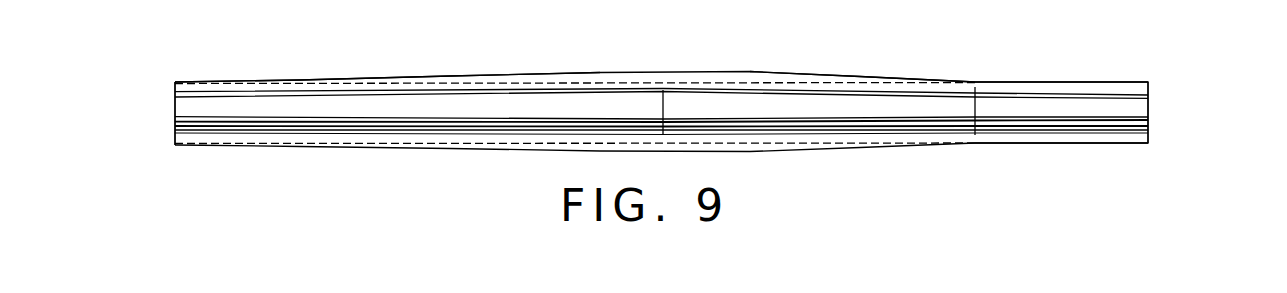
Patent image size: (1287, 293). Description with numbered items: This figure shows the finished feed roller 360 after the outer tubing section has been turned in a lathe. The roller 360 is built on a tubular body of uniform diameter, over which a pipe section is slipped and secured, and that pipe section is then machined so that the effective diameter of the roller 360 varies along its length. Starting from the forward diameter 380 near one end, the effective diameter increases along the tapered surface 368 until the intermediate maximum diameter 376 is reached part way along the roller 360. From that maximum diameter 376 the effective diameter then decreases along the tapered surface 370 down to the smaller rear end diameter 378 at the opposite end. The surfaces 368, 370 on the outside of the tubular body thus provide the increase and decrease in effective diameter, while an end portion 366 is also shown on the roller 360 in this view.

The feed roller 360 is at (1163, 101).
The shank portion 366 is at (1118, 82).
The surface 368 is at (762, 72).
The surface 370 is at (443, 75).
The intermediate maximum diameter 376 is at (663, 110).
The rear end diameter 378 is at (175, 100).
The forward diameter 380 is at (975, 97).